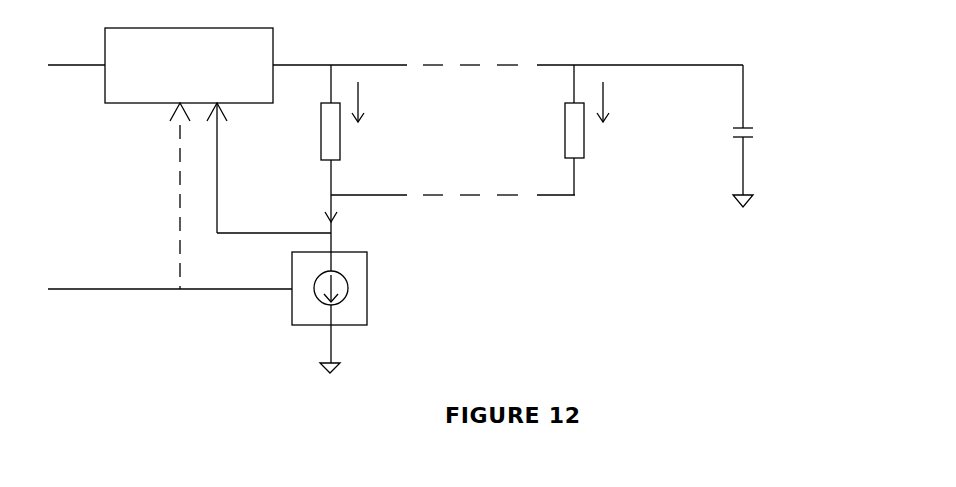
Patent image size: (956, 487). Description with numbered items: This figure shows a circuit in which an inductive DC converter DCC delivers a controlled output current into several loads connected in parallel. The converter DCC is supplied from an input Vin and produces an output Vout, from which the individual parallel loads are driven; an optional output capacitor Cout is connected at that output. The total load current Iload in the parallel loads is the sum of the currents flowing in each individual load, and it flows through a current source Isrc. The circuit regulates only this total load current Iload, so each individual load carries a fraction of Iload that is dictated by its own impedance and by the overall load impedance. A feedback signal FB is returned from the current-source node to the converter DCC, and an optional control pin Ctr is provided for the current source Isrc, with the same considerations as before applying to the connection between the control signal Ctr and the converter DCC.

The inductive DC converter DCC is at (189, 79).
The input voltage Vin is at (76, 56).
The output voltage Vout is at (508, 56).
The total load current Iload is at (354, 223).
The output capacitor Cout is at (768, 136).
The current source Isrc is at (348, 312).
The feedback signal FB is at (269, 168).
The control pin Ctr is at (170, 196).